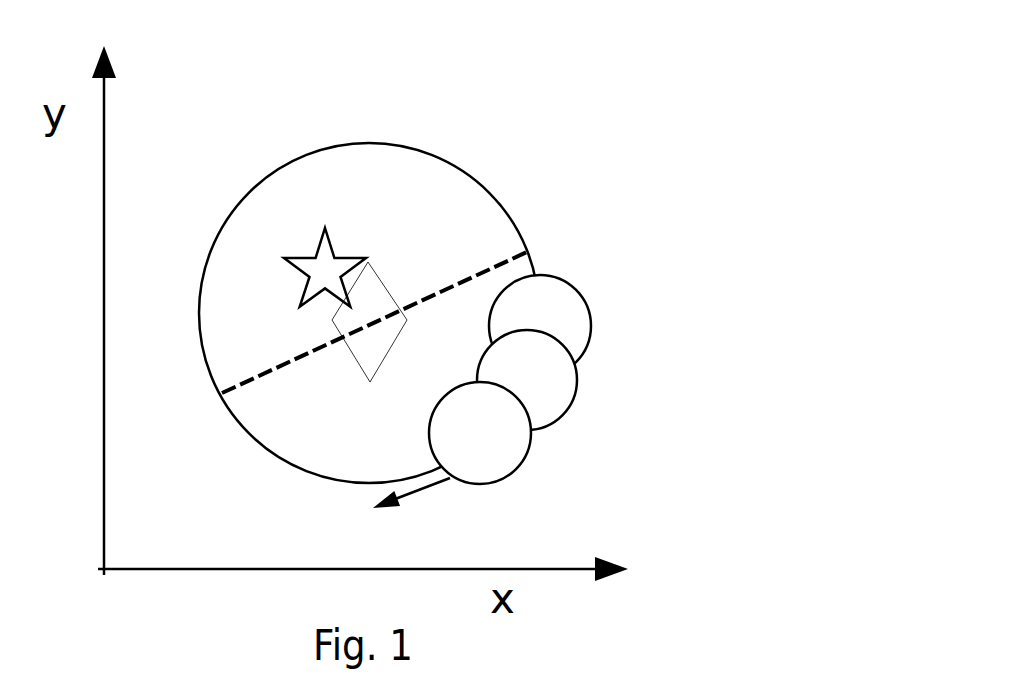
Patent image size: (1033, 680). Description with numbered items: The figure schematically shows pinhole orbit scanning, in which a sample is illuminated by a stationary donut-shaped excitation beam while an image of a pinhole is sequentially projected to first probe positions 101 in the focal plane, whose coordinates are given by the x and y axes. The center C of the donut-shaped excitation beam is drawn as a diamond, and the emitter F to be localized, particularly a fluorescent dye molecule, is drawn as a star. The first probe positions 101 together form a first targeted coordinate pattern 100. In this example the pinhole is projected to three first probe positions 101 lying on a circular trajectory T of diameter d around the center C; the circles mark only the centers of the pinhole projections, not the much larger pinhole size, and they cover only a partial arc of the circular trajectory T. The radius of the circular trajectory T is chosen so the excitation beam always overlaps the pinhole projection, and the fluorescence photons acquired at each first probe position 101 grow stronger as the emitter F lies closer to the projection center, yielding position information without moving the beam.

The circular trajectory T is at (388, 143).
The emitter F is at (315, 258).
The center C is at (385, 300).
The diameter d is at (493, 265).
The first targeted coordinate pattern 100 is at (606, 359).
The first probe positions 101 is at (580, 292).